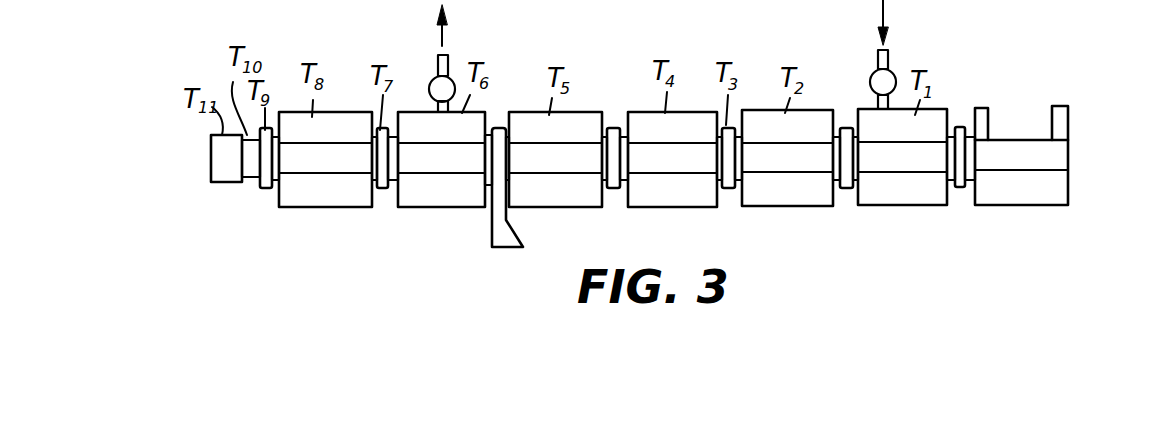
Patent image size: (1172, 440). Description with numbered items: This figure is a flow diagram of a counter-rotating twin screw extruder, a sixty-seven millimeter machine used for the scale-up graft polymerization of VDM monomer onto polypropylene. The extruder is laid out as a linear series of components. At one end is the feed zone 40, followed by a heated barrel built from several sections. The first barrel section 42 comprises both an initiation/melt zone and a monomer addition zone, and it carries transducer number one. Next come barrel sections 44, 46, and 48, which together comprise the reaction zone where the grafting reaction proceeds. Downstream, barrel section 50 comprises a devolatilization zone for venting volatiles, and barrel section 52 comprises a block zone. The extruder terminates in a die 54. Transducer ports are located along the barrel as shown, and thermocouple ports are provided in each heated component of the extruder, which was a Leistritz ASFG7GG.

The feed zone 40 is at (1063, 158).
The barrel section 42 is at (922, 200).
The barrel section 44 is at (820, 200).
The barrel section 46 is at (690, 200).
The barrel section 48 is at (580, 200).
The barrel section 50 is at (459, 202).
The barrel section 52 is at (350, 198).
The die 54 is at (228, 182).